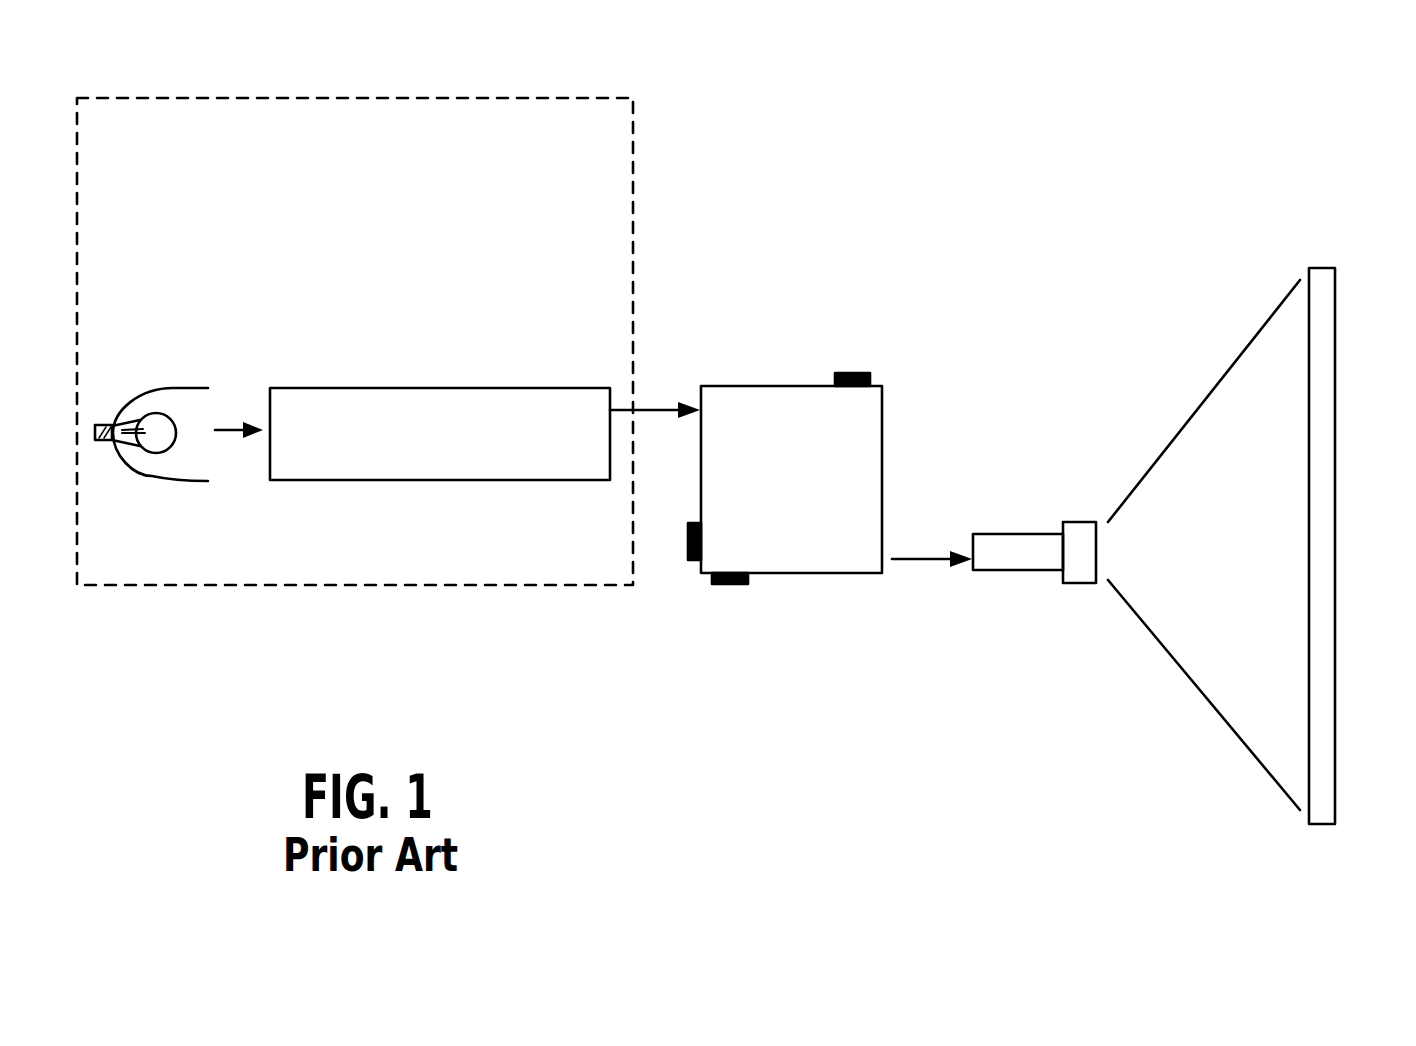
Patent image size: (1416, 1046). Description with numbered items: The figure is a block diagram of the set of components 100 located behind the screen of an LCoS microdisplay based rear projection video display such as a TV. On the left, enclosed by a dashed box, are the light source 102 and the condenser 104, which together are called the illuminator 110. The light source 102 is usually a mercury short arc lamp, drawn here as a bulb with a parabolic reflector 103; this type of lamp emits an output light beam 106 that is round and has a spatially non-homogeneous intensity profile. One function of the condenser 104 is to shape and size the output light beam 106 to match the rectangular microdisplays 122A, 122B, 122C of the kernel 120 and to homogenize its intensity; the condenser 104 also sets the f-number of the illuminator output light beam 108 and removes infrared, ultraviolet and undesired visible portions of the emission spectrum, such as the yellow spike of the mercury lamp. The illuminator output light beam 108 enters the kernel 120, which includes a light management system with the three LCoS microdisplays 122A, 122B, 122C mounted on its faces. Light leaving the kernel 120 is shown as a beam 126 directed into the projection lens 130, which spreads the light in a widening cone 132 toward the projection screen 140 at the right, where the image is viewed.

The set of components 100 is at (891, 176).
The light source 102 is at (152, 476).
The parabolic reflector 103 is at (173, 388).
The condenser 104 is at (441, 481).
The output light beam 106 is at (240, 425).
The illuminator output light beam 108 is at (665, 407).
The illuminator 110 is at (342, 98).
The kernel 120 is at (757, 385).
The LCoS microdisplay 122A is at (855, 372).
The LCoS microdisplay 122B is at (690, 560).
The LCoS microdisplay 122C is at (749, 584).
The modulated light 126 is at (921, 557).
The projection lens 130 is at (1017, 540).
The projected light 132 is at (1210, 388).
The projection screen 140 is at (1336, 553).